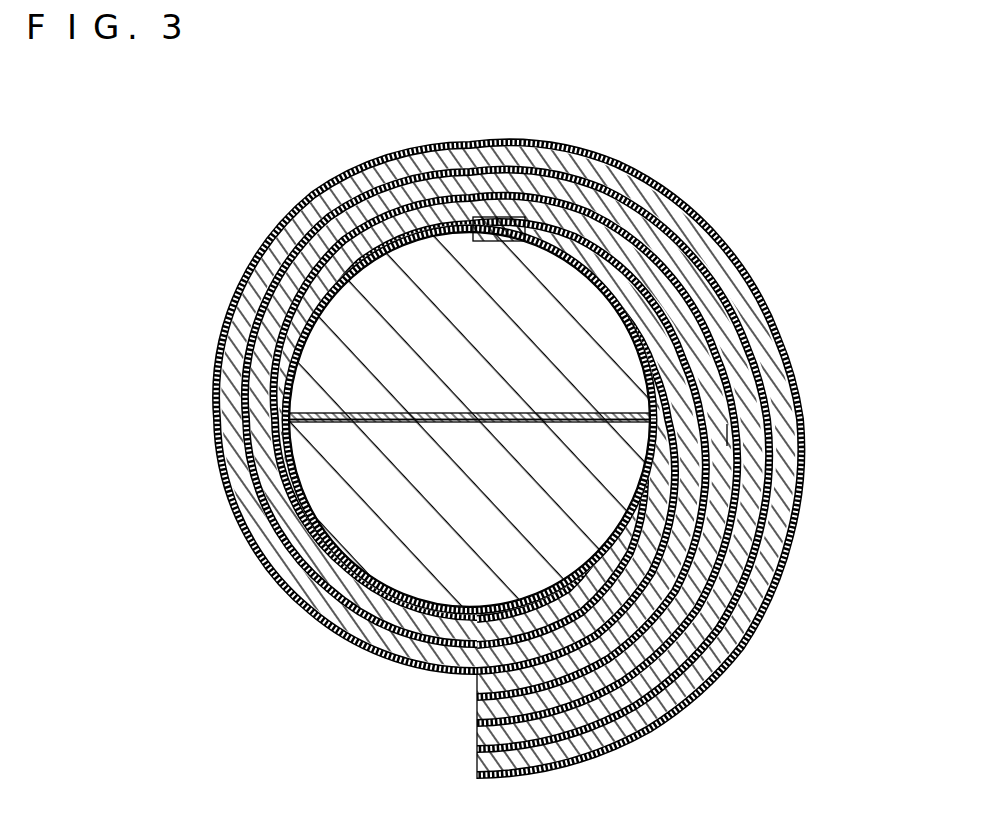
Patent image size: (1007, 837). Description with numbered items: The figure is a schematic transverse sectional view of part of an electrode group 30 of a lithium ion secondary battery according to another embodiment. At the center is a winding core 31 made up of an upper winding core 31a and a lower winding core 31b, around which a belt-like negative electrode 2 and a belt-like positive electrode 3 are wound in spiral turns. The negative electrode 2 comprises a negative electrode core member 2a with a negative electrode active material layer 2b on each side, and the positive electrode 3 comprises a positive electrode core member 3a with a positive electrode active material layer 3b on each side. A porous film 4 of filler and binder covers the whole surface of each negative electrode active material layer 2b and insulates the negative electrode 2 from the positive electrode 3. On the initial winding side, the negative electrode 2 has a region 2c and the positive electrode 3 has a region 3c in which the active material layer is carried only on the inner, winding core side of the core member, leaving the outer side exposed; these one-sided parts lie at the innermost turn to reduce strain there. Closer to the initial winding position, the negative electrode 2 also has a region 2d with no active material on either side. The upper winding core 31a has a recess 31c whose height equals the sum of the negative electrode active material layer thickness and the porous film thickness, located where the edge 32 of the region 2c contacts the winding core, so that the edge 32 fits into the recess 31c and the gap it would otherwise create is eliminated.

The electrode group 30 is at (705, 116).
The negative electrode 2 is at (591, 410).
The negative electrode core member 2a is at (692, 285).
The negative electrode active material layer 2b is at (690, 385).
The region where the active material layer is carried on only one side of the core m 2c is at (585, 236).
The region where the active material layer is carried on neither side of the core me 2d is at (477, 412).
The positive electrode 3 is at (543, 458).
The positive electrode core member 3a is at (680, 593).
The positive electrode active material layer 3b is at (700, 678).
The region where the active material layer is carried on only one side of the core m 3c is at (732, 480).
The porous film 4 is at (387, 640).
The winding core 31 is at (360, 339).
The upper winding core 31a is at (330, 373).
The lower winding core 31b is at (350, 462).
The recess 31c is at (450, 200).
The edge 32 is at (500, 180).